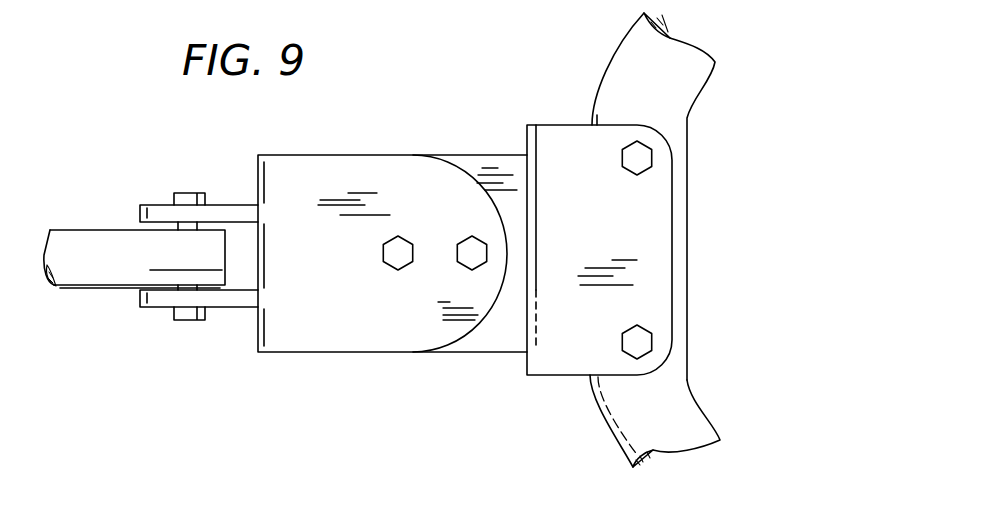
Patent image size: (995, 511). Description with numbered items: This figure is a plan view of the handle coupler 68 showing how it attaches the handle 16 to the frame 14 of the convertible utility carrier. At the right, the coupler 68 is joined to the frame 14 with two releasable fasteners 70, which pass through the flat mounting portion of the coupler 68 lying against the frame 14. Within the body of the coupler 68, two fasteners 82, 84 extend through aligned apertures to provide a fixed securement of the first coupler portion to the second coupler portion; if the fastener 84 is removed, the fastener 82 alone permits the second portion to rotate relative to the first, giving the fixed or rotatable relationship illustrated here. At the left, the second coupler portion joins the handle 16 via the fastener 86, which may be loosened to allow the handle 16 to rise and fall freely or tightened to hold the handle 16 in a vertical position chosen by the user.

The frame 14 is at (727, 52).
The handle 16 is at (125, 265).
The coupler 68 is at (484, 130).
The releasable fasteners 70 is at (640, 157).
The fastener 82 is at (403, 264).
The fastener 84 is at (473, 262).
The fastener 86 is at (184, 321).